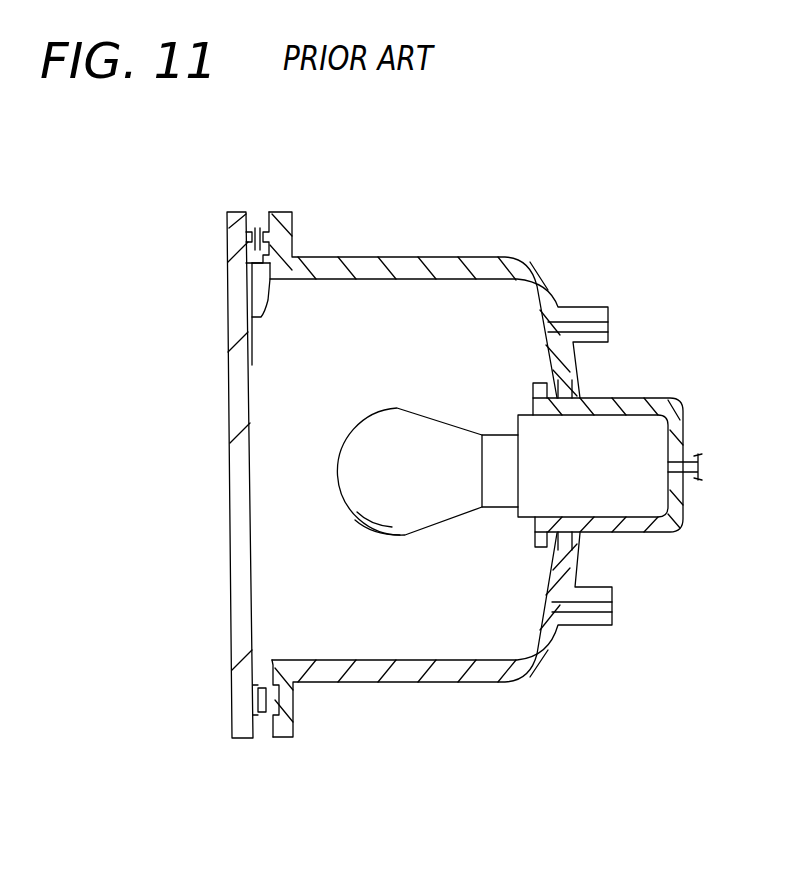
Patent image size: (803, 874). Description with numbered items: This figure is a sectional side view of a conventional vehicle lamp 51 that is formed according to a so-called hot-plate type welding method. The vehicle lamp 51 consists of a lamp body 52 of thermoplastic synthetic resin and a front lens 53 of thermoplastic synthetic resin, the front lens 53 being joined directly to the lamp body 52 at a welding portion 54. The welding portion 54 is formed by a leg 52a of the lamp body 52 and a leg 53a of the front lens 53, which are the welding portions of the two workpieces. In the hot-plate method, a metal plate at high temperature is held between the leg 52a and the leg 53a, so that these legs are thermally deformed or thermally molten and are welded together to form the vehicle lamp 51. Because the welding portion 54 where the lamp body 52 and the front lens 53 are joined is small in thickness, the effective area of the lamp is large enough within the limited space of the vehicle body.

The vehicle lamp 51 is at (557, 200).
The lamp body 52 is at (377, 257).
The leg of the lamp body 52a is at (279, 308).
The front lens 53 is at (229, 487).
The leg of the front lens 53a is at (249, 287).
The welding portion 54 is at (257, 222).